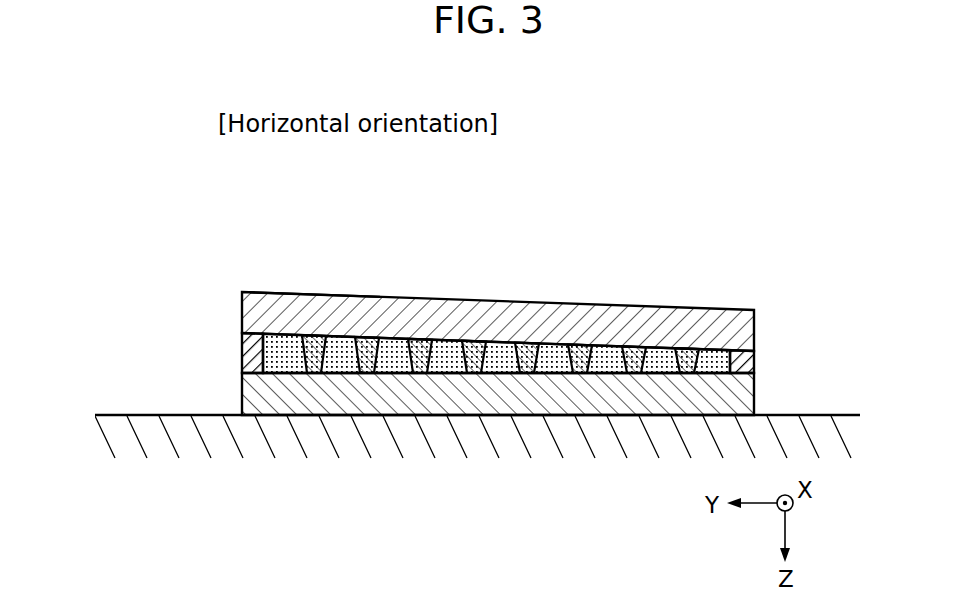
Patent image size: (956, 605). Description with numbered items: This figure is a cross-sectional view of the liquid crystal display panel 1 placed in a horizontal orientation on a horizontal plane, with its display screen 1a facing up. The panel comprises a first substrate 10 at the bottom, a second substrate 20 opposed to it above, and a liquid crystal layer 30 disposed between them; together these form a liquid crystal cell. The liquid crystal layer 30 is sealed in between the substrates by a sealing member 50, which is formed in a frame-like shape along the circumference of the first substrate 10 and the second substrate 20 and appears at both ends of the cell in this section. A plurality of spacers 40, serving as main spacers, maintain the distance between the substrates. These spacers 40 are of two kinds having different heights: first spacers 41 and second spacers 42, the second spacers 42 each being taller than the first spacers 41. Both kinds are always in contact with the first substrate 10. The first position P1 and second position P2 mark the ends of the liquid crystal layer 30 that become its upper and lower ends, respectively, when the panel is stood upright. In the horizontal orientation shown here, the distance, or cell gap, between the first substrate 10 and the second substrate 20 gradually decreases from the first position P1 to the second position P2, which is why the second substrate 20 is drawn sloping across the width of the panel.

The liquid crystal display panel 1 is at (188, 203).
The display screen 1a is at (313, 281).
The first substrate 10 is at (733, 393).
The second substrate 20 is at (756, 320).
The liquid crystal layer 30 is at (283, 348).
The spacers 40 is at (732, 215).
The first spacers 41 is at (420, 352).
The second spacers 42 is at (314, 352).
The sealing member 50 is at (243, 352).
The first position P1 is at (265, 325).
The second position P2 is at (730, 343).